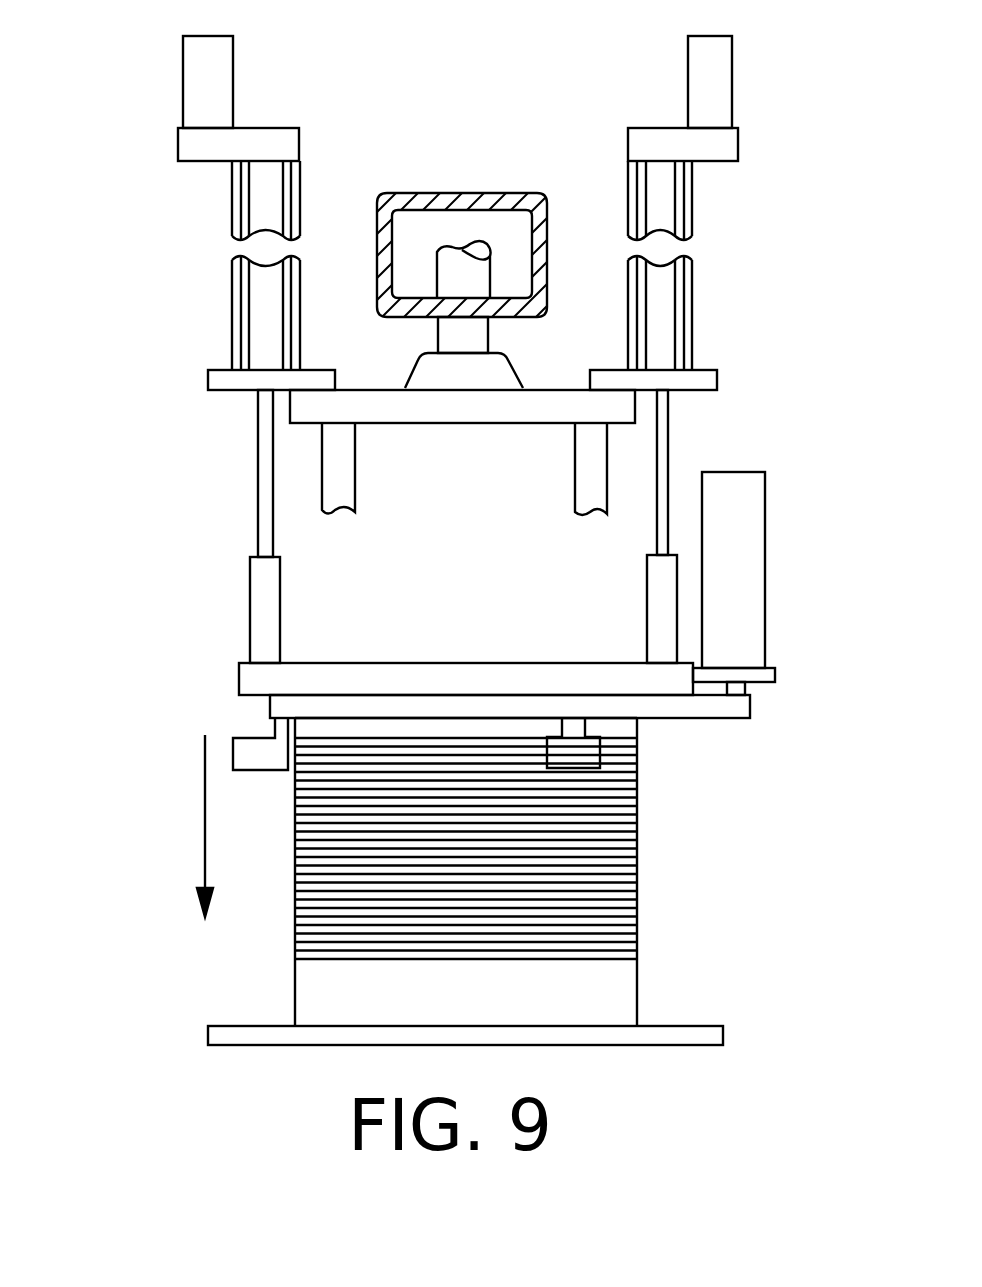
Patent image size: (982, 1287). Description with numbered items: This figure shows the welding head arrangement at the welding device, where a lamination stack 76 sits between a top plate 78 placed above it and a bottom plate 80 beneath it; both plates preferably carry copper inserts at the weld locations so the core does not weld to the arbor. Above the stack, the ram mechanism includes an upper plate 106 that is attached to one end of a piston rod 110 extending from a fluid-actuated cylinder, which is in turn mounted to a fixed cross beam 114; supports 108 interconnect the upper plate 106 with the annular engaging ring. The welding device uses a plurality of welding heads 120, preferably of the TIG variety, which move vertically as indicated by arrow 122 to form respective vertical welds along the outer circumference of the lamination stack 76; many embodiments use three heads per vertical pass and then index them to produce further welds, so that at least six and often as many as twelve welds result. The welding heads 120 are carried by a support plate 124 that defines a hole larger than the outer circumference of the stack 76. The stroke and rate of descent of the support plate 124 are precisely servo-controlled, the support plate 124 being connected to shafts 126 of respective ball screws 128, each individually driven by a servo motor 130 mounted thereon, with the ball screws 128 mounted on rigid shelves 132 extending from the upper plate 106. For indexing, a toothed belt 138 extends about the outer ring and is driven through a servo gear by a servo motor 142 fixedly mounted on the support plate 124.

The lamination stack 76 is at (625, 870).
The top plate 78 is at (627, 727).
The bottom plate 80 is at (622, 997).
The upper plate 106 is at (472, 407).
The supports 108 is at (348, 485).
The piston rod 110 is at (448, 334).
The fixed cross beam 114 is at (443, 193).
The welding heads 120 is at (255, 770).
The arrow 122 is at (204, 820).
The support plate 124 is at (353, 660).
The shafts 126 is at (263, 450).
The ball screws 128 is at (242, 305).
The servo motors 130 is at (194, 68).
The rigid shelves 132 is at (208, 378).
The toothed belt 138 is at (287, 707).
The servo motor 142 is at (752, 607).